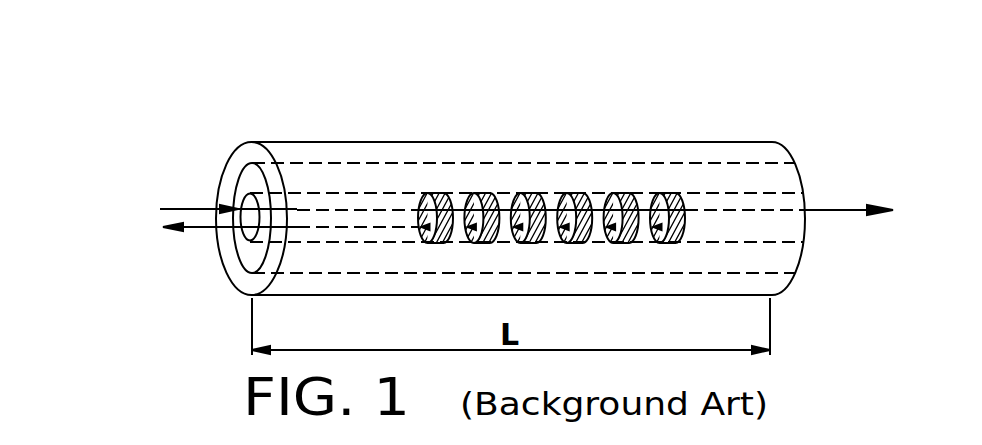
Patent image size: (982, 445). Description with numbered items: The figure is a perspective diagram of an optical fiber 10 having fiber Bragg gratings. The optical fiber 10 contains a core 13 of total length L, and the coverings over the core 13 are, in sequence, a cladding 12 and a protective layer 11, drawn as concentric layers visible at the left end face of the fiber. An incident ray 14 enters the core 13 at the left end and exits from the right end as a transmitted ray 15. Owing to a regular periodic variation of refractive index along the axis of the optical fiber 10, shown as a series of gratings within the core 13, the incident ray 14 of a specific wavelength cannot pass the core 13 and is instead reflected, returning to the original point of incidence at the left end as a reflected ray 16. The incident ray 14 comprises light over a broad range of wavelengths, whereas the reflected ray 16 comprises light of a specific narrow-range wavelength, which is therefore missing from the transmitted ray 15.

The optical fiber 10 is at (534, 98).
The protective layer 11 is at (250, 153).
The cladding 12 is at (250, 183).
The core 13 is at (244, 238).
The incident ray 14 is at (172, 207).
The transmitted ray 15 is at (832, 210).
The reflected ray 16 is at (202, 231).